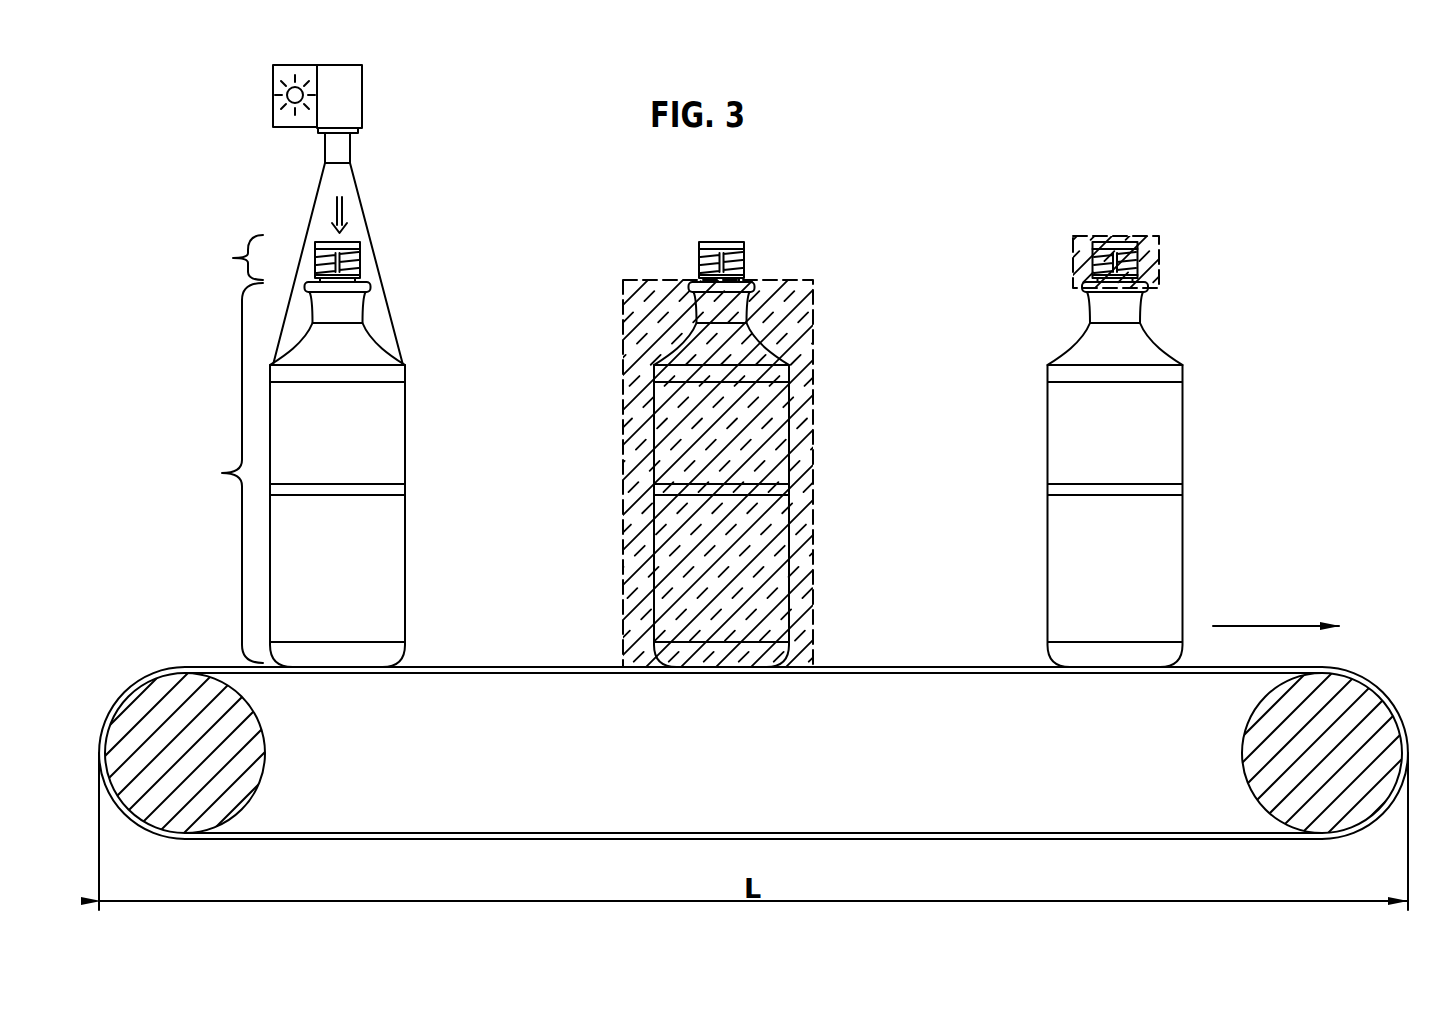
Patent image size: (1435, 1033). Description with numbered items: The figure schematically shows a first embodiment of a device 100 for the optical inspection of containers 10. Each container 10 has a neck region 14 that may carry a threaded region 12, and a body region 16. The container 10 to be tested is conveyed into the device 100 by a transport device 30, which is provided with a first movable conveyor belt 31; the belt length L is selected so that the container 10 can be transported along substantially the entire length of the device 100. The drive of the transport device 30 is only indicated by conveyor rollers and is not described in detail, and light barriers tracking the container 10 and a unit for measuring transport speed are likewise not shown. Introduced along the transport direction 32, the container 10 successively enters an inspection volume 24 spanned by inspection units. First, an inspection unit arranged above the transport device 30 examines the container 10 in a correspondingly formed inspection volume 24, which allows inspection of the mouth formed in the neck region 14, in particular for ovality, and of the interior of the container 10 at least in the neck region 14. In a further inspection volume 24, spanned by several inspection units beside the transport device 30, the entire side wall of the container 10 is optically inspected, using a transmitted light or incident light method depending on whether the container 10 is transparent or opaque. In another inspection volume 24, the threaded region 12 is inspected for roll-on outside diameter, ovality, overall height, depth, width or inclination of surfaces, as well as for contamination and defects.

The container 10 is at (384, 446).
The threaded region 12 is at (229, 257).
The neck region 14 is at (368, 258).
The body region 16 is at (223, 473).
The inspection volume 24 is at (356, 238).
The transport device 30 is at (1397, 699).
The first movable conveyor belt 31 is at (237, 668).
The transport direction 32 is at (1280, 626).
The device for optical inspection of containers 100 is at (1279, 306).